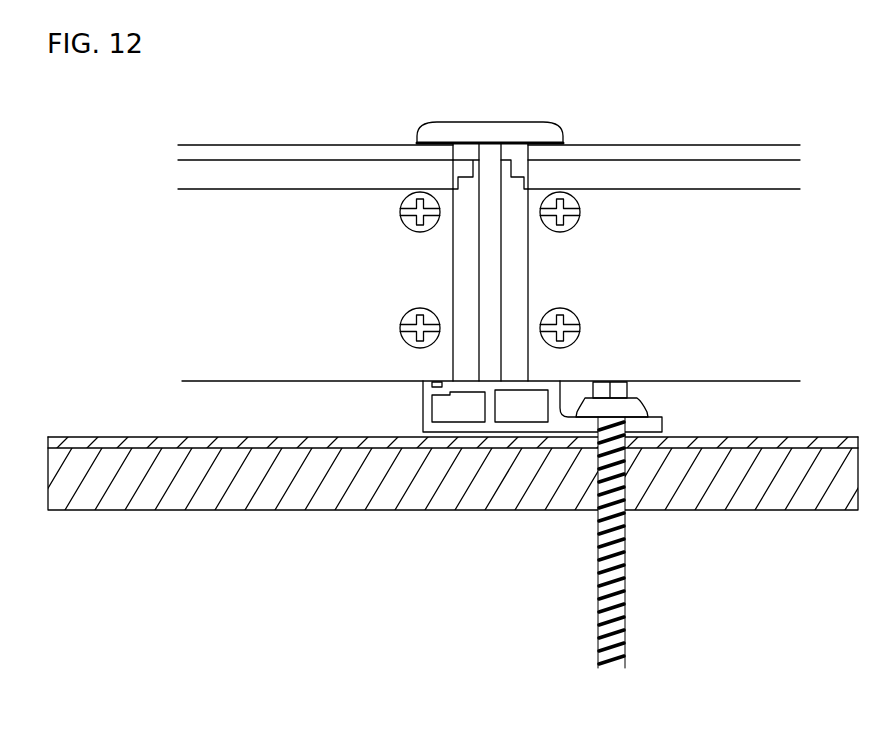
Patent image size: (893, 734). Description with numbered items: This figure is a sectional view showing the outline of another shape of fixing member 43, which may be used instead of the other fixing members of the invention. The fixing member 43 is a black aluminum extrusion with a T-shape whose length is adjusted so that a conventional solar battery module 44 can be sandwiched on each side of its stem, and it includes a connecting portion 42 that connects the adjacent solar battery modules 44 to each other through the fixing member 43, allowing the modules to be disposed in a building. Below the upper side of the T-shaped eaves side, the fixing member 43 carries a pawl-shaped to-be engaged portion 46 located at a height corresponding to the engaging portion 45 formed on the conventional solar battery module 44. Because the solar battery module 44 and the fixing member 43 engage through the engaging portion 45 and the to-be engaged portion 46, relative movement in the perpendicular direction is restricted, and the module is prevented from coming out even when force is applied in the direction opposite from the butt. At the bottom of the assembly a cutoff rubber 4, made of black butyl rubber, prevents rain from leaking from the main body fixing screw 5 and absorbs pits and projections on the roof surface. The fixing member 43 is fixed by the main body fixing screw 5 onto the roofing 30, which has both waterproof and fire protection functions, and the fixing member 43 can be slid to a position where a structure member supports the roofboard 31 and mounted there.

The cutoff rubber 4 is at (463, 437).
The main body fixing screw 5 is at (617, 393).
The roofing 30 is at (115, 440).
The roofboard 31 is at (143, 487).
The connecting portion 42 is at (535, 160).
The fixing member 43 is at (470, 127).
The solar battery module 44 is at (330, 167).
The engaging portion 45 is at (508, 180).
The to-be engaged portion 46 is at (466, 158).